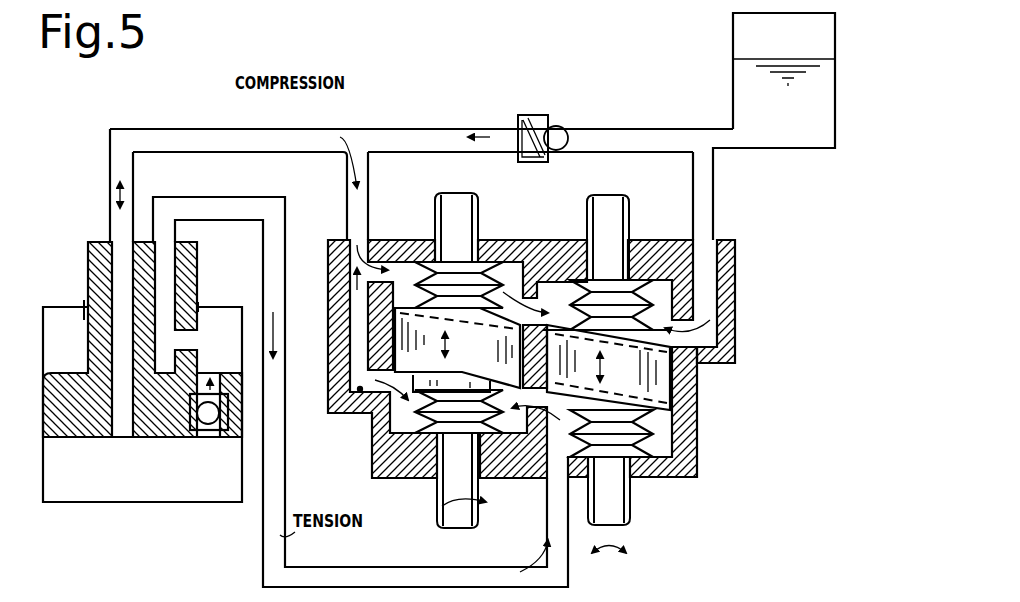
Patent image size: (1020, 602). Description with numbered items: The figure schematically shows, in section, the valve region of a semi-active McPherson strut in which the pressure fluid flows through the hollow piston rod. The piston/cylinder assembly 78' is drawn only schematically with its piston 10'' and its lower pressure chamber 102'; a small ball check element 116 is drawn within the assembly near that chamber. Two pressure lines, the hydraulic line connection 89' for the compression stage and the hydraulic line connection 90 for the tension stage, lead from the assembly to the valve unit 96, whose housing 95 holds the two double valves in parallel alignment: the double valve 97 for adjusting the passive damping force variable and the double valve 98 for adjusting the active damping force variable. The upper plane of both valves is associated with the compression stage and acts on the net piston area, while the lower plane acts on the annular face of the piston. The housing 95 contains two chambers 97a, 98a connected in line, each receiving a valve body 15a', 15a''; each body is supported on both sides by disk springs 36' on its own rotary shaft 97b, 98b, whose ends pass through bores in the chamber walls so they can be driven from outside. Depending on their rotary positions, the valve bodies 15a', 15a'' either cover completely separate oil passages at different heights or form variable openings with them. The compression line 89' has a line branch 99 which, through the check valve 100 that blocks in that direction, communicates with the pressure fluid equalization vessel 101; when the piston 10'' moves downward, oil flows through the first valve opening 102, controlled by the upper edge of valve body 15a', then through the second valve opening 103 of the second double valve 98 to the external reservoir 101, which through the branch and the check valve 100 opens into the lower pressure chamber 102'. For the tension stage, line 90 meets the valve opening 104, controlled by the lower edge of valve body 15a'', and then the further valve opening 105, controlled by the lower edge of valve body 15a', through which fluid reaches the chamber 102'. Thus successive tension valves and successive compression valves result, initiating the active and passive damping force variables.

The piston 10'' is at (140, 351).
The piston/cylinder assembly 78' is at (142, 418).
The lower pressure chamber 102' is at (142, 516).
The ball check valve 116 is at (232, 440).
The hydraulic line connection for the compression stage 89' is at (129, 157).
The hydraulic line connection for the tension stage 90 is at (215, 207).
The line branch 99 is at (363, 142).
The check valve 100 is at (545, 116).
The pressure fluid equalization vessel 101 is at (750, 92).
The housing 95 is at (566, 379).
The valve unit 96 is at (704, 372).
The double valve for adjusting the active damping force variable 98 is at (672, 440).
The double valve for adjusting the passive damping force variable 97 is at (370, 438).
The first valve opening 102 is at (541, 280).
The second valve opening 103 is at (693, 342).
The first valve opening 104 is at (510, 424).
The further valve opening 105 is at (360, 392).
The valve body 15a' is at (457, 232).
The valve body 15a'' is at (693, 389).
The chamber 97a is at (507, 247).
The rotary shaft 97b is at (437, 500).
The chamber 98a is at (658, 245).
The rotary shaft 98b is at (625, 503).
The disk springs 36' is at (516, 366).